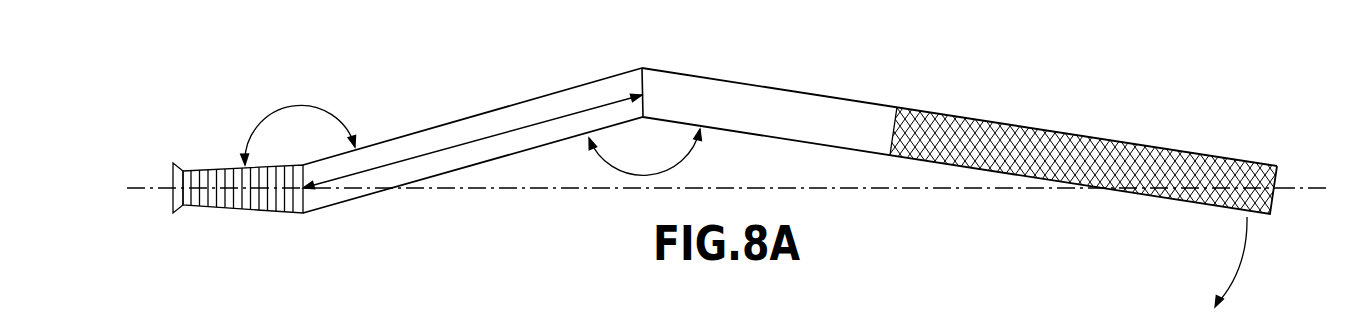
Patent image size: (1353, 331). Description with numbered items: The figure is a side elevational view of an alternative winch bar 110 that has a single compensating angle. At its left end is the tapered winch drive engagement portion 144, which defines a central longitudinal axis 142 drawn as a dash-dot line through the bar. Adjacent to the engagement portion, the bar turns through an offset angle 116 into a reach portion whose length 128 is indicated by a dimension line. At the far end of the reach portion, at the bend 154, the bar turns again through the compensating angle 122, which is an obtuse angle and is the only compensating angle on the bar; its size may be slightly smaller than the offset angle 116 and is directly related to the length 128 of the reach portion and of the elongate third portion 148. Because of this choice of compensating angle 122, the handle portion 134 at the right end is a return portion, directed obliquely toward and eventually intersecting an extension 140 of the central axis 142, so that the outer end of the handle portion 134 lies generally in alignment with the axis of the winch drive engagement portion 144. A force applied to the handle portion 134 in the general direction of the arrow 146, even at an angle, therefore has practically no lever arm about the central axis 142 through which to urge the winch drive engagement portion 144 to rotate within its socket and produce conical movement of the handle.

The winch bar 110 is at (840, 94).
The elongate third portion 148 is at (716, 78).
The bend 154 is at (640, 137).
The length of the reach portion 128 is at (472, 140).
The offset angle 116 is at (302, 107).
The compensating angle 122 is at (612, 170).
The central longitudinal axis 142 is at (143, 183).
The extension of the central longitudinal axis 140 is at (1299, 187).
The winch drive engagement portion 144 is at (237, 213).
The handle portion 134 is at (1244, 158).
The arrow 146 is at (1243, 256).